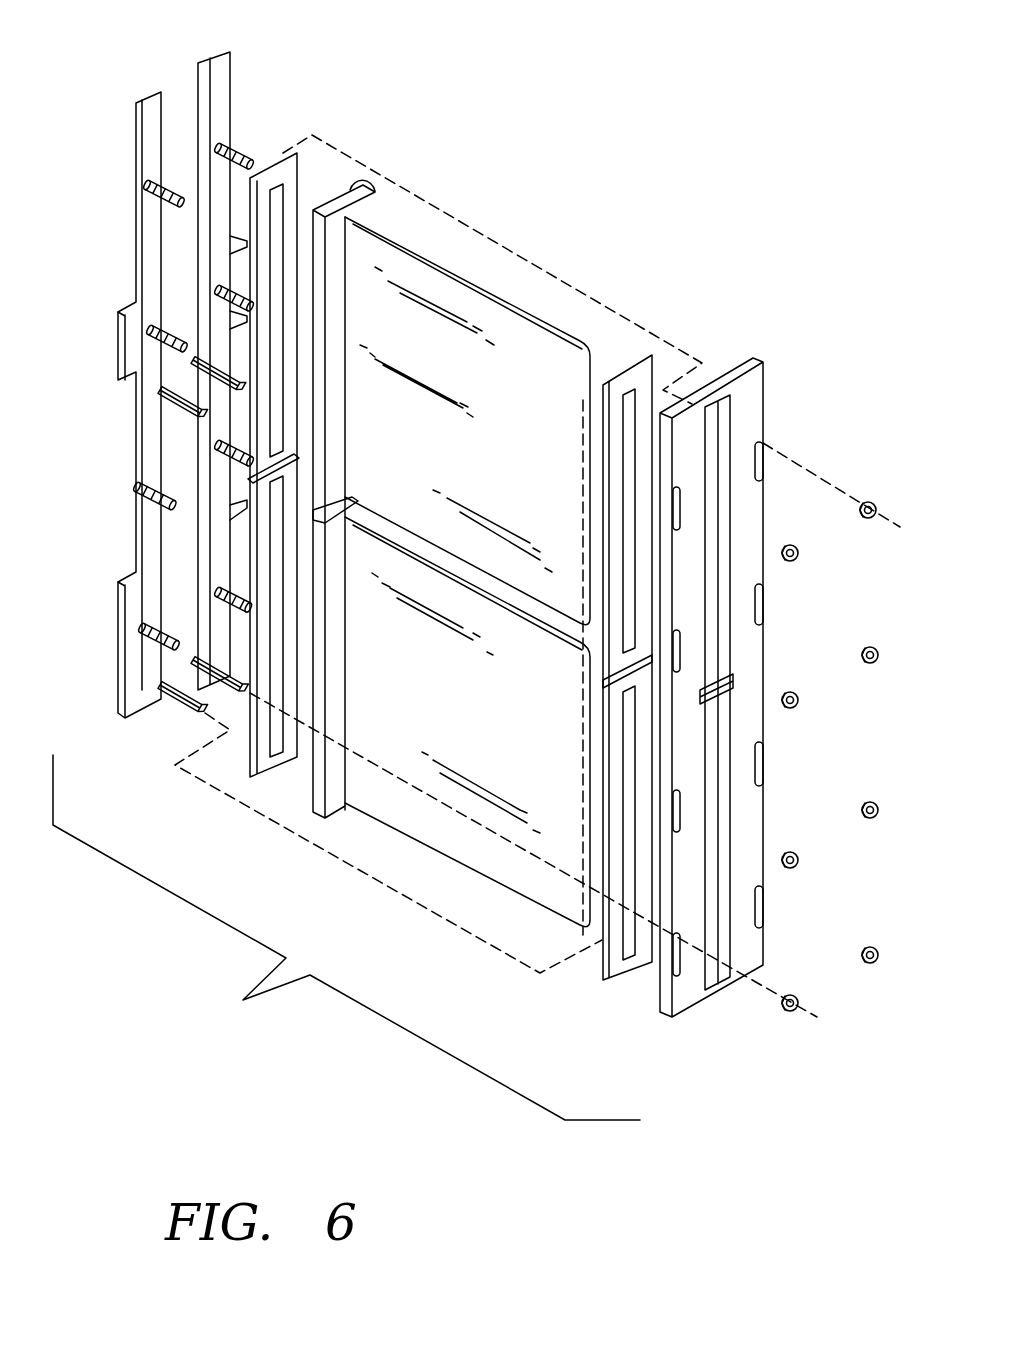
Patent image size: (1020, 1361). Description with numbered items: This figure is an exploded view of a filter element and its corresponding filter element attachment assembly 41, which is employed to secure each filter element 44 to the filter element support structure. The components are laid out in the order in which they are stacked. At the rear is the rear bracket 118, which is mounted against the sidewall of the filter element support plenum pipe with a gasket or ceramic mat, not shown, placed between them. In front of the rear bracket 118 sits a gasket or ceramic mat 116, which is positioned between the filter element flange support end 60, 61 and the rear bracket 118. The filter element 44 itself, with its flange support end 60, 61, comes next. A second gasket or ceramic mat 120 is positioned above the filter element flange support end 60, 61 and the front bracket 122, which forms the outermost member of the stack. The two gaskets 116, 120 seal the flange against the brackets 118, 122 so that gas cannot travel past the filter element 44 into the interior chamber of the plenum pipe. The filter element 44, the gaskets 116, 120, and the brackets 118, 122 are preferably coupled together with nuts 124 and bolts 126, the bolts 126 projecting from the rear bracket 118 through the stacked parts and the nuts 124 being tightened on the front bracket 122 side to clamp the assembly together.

The filter element attachment assembly 41 is at (346, 937).
The filter element 44 is at (465, 303).
The filter element flange support end 60 is at (362, 172).
The filter element flange support end 61 is at (370, 205).
The gasket or ceramic mat 116 is at (300, 170).
The rear bracket 118 is at (217, 53).
The gasket or ceramic mat 120 is at (657, 363).
The front bracket 122 is at (747, 400).
The nuts 124 is at (870, 663).
The bolts 126 is at (172, 498).